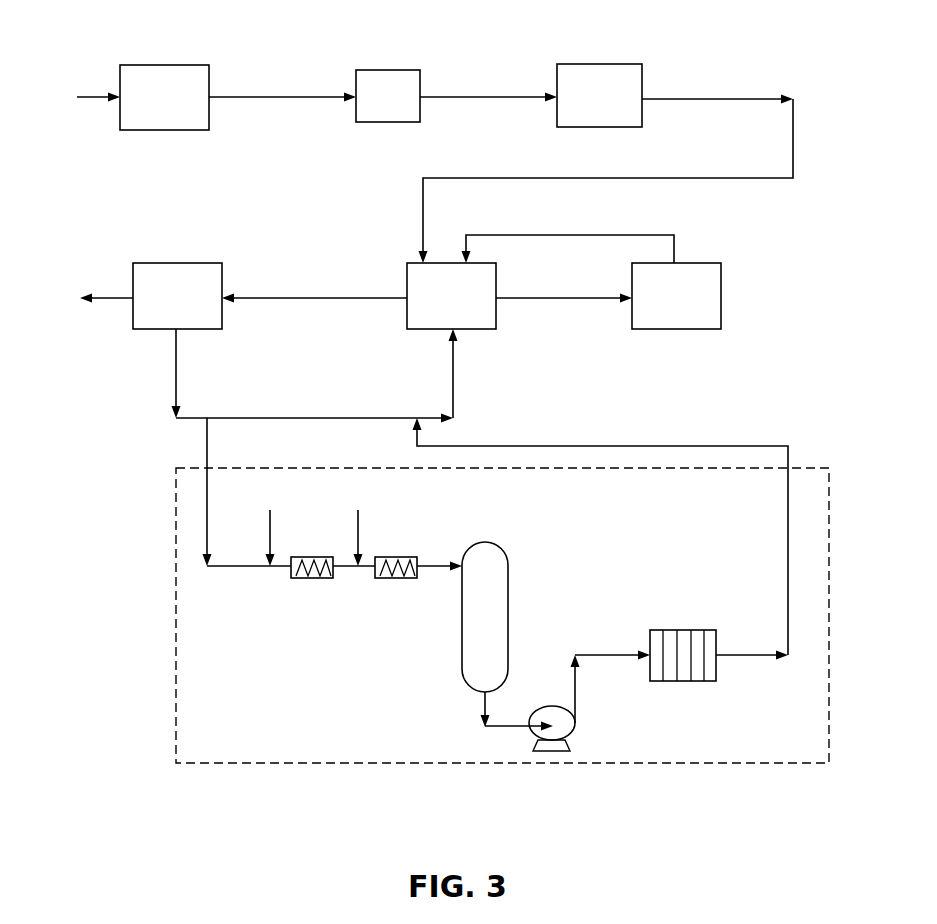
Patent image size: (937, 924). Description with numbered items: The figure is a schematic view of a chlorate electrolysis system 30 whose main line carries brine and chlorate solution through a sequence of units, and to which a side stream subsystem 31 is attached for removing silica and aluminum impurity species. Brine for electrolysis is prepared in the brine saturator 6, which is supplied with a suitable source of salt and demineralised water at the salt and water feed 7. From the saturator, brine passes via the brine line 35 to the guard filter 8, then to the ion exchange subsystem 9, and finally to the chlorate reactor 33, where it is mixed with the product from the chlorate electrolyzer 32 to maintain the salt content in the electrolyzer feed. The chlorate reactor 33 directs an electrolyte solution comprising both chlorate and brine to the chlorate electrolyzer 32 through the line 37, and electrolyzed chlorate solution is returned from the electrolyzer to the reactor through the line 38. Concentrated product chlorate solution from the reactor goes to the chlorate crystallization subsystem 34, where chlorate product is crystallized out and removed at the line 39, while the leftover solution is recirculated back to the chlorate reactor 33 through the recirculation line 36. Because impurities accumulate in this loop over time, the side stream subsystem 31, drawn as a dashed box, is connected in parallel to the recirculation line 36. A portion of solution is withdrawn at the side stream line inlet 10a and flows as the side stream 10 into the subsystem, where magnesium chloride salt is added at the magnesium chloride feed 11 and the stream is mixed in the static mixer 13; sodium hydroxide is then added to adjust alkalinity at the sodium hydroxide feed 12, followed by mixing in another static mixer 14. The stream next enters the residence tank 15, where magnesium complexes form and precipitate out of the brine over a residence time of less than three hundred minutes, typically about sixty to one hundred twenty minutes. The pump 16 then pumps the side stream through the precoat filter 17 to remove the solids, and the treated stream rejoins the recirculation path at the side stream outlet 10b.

The brine saturator 6 is at (162, 86).
The salt and water feed 7 is at (94, 97).
The guard filter 8 is at (386, 86).
The ion exchange subsystem 9 is at (598, 84).
The side stream 10 is at (205, 495).
The side stream line inlet 10a is at (202, 418).
The side stream outlet 10b is at (412, 418).
The magnesium chloride feed 11 is at (273, 540).
The sodium hydroxide feed 12 is at (360, 540).
The static mixer 13 is at (320, 578).
The static mixer 14 is at (398, 578).
The residence tank 15 is at (486, 605).
The pump 16 is at (566, 723).
The precoat filter 17 is at (682, 642).
The chlorate electrolysis system 30 is at (736, 48).
The side stream subsystem 31 is at (160, 655).
The chlorate electrolyzer 32 is at (675, 305).
The chlorate reactor 33 is at (453, 303).
The chlorate crystallization subsystem 34 is at (176, 315).
The brine line 35 is at (793, 152).
The recirculation line 36 is at (290, 412).
The line 37 is at (547, 302).
The line 38 is at (593, 230).
The line 39 is at (112, 293).